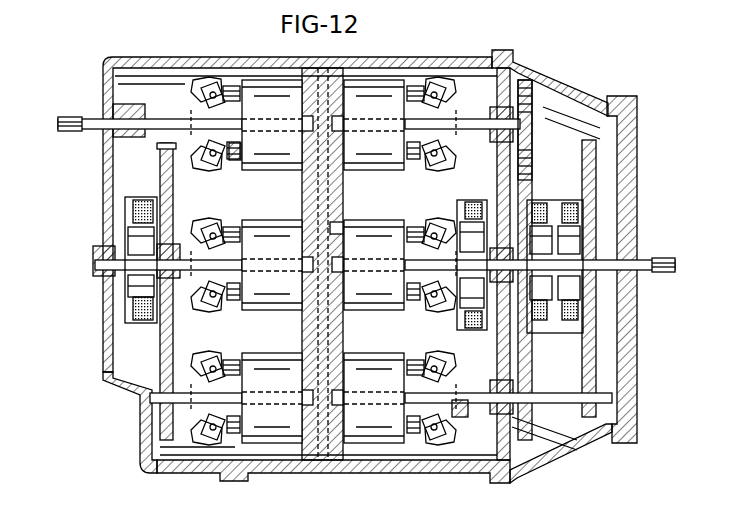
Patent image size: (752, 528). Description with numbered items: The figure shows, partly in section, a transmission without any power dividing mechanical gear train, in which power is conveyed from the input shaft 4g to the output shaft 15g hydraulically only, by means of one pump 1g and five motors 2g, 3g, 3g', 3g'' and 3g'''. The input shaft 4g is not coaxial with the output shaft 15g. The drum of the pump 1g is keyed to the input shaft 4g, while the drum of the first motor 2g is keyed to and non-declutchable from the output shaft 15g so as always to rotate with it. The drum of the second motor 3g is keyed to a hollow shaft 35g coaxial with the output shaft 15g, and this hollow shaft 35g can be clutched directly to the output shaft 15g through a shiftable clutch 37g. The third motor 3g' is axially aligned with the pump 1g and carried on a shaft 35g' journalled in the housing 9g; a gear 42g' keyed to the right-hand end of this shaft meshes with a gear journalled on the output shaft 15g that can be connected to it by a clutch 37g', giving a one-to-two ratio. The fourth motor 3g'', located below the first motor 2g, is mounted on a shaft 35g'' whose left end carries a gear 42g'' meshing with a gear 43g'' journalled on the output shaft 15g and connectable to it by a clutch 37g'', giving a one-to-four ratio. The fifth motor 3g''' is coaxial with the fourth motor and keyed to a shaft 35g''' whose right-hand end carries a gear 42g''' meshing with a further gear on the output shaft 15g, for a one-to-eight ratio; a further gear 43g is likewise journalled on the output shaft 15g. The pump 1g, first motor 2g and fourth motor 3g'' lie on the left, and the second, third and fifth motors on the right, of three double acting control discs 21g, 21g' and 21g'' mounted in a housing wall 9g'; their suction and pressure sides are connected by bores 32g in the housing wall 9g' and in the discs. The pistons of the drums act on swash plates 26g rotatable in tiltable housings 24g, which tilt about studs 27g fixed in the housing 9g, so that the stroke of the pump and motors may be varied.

The housing 9g is at (303, 247).
The tiltable housing 24g is at (232, 72).
The pump 1g is at (265, 100).
The double acting control disc 21g is at (322, 83).
The third motor 3g' is at (374, 103).
The shaft of third motor 35g' is at (438, 102).
The gear 42g' is at (550, 90).
The input shaft 4g is at (71, 131).
The clutch 37g'' is at (358, 201).
The swash plate 26g is at (228, 163).
The first motor 2g is at (256, 218).
The double acting control disc 21g' is at (305, 228).
The housing wall 9g' is at (354, 207).
The second motor 3g is at (374, 245).
The clutch 37g' is at (555, 245).
The gear 43g'' is at (375, 269).
The output shaft 15g is at (667, 277).
The stud 27g is at (200, 280).
The shaft of fourth motor 35g'' is at (210, 386).
The double acting control disc 21g'' is at (296, 361).
The hollow shaft 35g is at (409, 280).
The shiftable clutch 37g is at (466, 277).
The partition wall 43g is at (556, 260).
The gear 42g'' is at (134, 422).
The fourth motor 3g'' is at (272, 427).
The bores 32g is at (315, 472).
The fifth motor 3g''' is at (374, 433).
The shaft of fifth motor 35g''' is at (452, 424).
The gear 42g''' is at (566, 450).